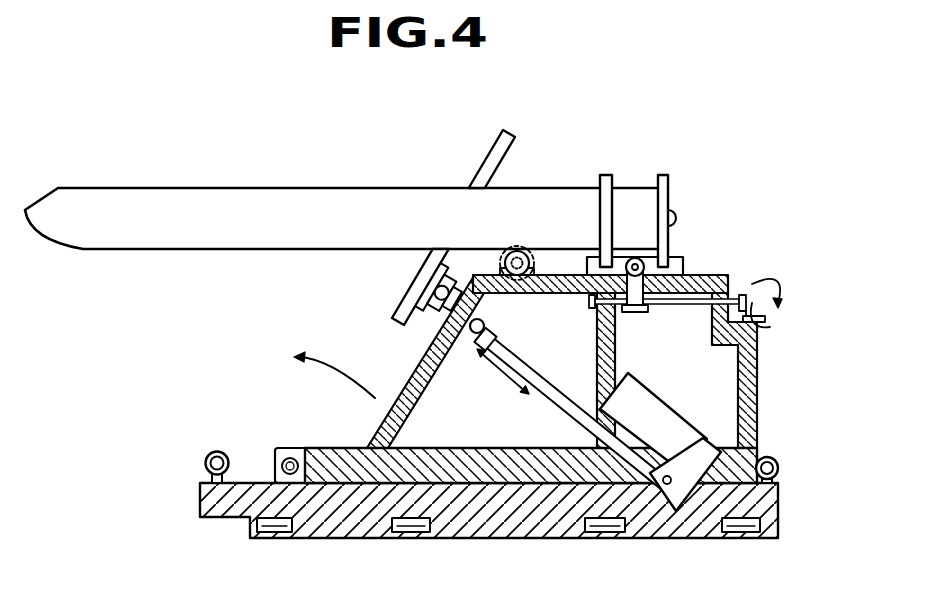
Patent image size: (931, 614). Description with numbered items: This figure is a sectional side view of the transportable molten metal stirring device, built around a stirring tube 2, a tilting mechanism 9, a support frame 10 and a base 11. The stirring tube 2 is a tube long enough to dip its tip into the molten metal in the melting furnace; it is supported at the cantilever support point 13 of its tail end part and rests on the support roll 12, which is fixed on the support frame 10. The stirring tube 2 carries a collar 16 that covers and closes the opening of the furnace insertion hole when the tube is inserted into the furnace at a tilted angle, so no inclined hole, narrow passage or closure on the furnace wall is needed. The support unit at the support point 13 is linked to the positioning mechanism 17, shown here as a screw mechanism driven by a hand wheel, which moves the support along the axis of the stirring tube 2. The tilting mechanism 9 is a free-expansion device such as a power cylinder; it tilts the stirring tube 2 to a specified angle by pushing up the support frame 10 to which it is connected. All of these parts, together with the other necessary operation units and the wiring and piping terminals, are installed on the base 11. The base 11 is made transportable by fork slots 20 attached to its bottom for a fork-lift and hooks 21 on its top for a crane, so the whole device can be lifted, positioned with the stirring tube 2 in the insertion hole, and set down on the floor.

The stirring tube 2 is at (206, 187).
The tilting mechanism 9 is at (546, 372).
The support frame 10 is at (714, 278).
The base 11 is at (780, 510).
The support roll 12 is at (514, 247).
The support point 13 is at (667, 254).
The collar 16 is at (488, 162).
The positioning mechanism 17 is at (752, 283).
The fork slots 20 is at (283, 538).
The hooks 21 is at (211, 455).